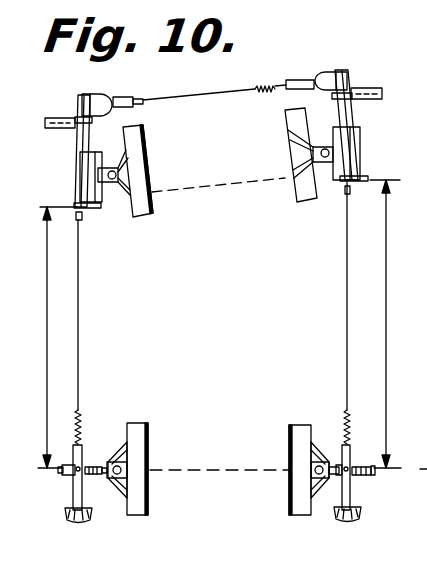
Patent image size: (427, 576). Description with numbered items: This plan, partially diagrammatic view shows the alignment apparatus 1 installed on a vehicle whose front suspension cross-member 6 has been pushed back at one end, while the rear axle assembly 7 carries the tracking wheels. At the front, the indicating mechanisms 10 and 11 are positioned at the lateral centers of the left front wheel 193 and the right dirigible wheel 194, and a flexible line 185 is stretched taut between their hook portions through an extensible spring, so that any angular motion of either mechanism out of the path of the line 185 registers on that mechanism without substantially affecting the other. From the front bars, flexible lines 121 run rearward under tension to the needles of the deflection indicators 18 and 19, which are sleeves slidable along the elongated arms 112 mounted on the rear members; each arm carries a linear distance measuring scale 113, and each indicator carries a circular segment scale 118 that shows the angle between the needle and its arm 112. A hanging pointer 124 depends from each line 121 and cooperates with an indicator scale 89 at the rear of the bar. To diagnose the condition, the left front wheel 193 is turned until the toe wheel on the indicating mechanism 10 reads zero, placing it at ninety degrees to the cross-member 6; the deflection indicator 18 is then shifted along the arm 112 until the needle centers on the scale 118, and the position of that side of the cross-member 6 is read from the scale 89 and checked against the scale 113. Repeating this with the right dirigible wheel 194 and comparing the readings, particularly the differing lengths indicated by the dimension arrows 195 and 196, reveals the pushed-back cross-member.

The apparatus 1 is at (354, 78).
The indicating mechanism 10 is at (118, 97).
The indicating mechanism 11 is at (297, 79).
The flexible line 185 is at (190, 90).
The front suspension cross-member 6 is at (245, 163).
The rear axle assembly 7 is at (217, 470).
The left front wheel 193 is at (147, 198).
The right dirigible wheel 194 is at (307, 200).
The indicator scale 89 is at (93, 207).
The hanging pointer 124 is at (80, 220).
The flexible line 121 is at (78, 298).
The dimension arrow 195 is at (47, 328).
The dimension arrow 196 is at (386, 318).
The deflection indicator 18 is at (84, 462).
The deflection indicator 19 is at (341, 464).
The elongated arm 112 is at (63, 475).
The linear distance measuring scale 113 is at (100, 475).
The circular segment scale 118 is at (72, 522).